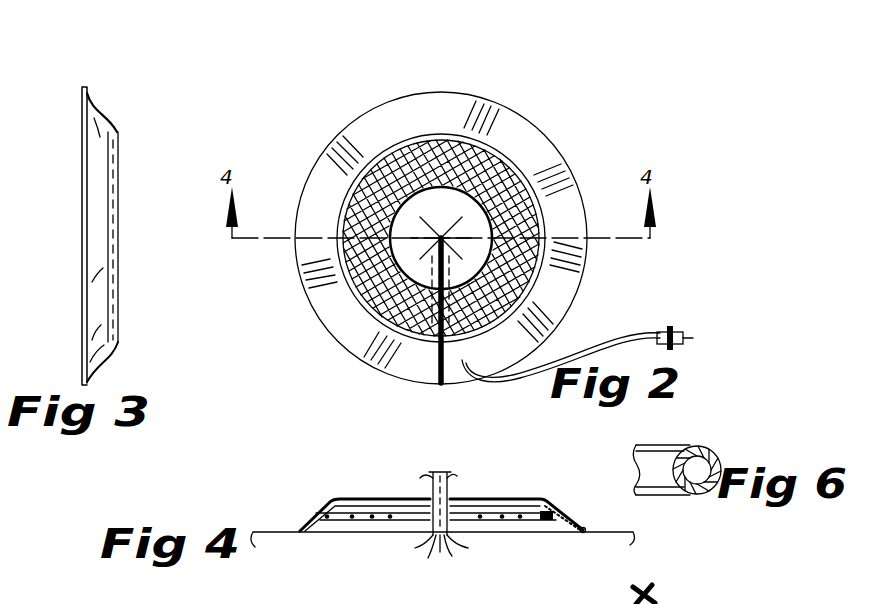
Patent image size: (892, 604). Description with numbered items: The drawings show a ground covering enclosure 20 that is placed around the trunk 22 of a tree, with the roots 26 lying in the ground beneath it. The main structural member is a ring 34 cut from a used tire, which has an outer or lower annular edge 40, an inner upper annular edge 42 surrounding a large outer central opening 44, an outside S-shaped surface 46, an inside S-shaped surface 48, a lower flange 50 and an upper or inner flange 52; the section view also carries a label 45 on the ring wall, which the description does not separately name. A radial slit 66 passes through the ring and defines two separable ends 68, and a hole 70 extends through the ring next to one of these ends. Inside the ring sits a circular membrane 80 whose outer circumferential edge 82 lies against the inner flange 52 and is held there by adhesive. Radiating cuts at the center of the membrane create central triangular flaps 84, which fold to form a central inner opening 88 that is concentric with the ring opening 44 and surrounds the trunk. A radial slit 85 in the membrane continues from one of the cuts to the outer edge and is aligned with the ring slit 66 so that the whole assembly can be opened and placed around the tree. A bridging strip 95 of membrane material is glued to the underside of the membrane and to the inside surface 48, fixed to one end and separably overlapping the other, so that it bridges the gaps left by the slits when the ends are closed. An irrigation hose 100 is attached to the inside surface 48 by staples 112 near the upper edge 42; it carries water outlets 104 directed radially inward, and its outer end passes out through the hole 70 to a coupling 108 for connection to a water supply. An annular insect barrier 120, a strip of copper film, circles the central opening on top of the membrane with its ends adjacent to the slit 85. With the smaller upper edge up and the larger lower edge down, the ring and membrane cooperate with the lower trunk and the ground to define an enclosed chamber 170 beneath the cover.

In FIG. 2, the ground covering enclosure 20 is at (551, 96).
In FIG. 4, the trunk 22 is at (437, 474).
In FIG. 4, the roots 26 is at (413, 548).
In FIG. 2, the ring 34 is at (572, 145).
In FIG. 3, the ring 34 is at (122, 124).
In FIG. 4, the ring 34 is at (314, 504).
In FIG. 2, the outer or lower annular edge 40 is at (310, 177).
In FIG. 3, the outer or lower annular edge 40 is at (83, 86).
In FIG. 4, the outer or lower annular edge 40 is at (300, 531).
In FIG. 2, the inner upper annular edge 42 is at (402, 140).
In FIG. 3, the inner upper annular edge 42 is at (119, 276).
In FIG. 4, the inner upper annular edge 42 is at (303, 528).
In FIG. 4, the outer central opening 44 is at (527, 499).
In FIG. 4, the bottom plate 45 is at (545, 594).
In FIG. 2, the outside S-shaped surface 46 is at (502, 120).
In FIG. 4, the inside S-shaped surface 48 is at (582, 524).
In FIG. 3, the outer or lower flange 50 is at (89, 96).
In FIG. 4, the outer or lower flange 50 is at (300, 529).
In FIG. 2, the upper or inner flange 52 is at (537, 282).
In FIG. 4, the upper or inner flange 52 is at (337, 498).
In FIG. 2, the radial slit 66 is at (437, 363).
In FIG. 2, the separable ends 68 is at (455, 371).
In FIG. 4, the separable ends 68 is at (433, 475).
In FIG. 2, the hole 70 is at (465, 364).
In FIG. 2, the membrane 80 is at (377, 320).
In FIG. 4, the membrane 80 is at (482, 502).
In FIG. 4, the outer circumferential edge 82 is at (622, 484).
In FIG. 2, the central triangular flaps 84 is at (441, 238).
In FIG. 4, the central triangular flaps 84 is at (432, 492).
In FIG. 2, the radial slit 85 is at (420, 283).
In FIG. 2, the central inner opening 88 is at (390, 227).
In FIG. 4, the central inner opening 88 is at (423, 505).
In FIG. 2, the bridging strip 95 is at (452, 301).
In FIG. 6, the irrigation hose 100 is at (720, 458).
In FIG. 4, the water outlets 104 is at (520, 518).
In FIG. 6, the water outlets 104 is at (670, 466).
In FIG. 2, the coupling 108 is at (692, 331).
In FIG. 4, the coupling 108 is at (657, 598).
In FIG. 4, the staples 112 is at (503, 521).
In FIG. 2, the annular insect barrier 120 is at (387, 143).
In FIG. 4, the enclosed chamber 170 is at (315, 540).